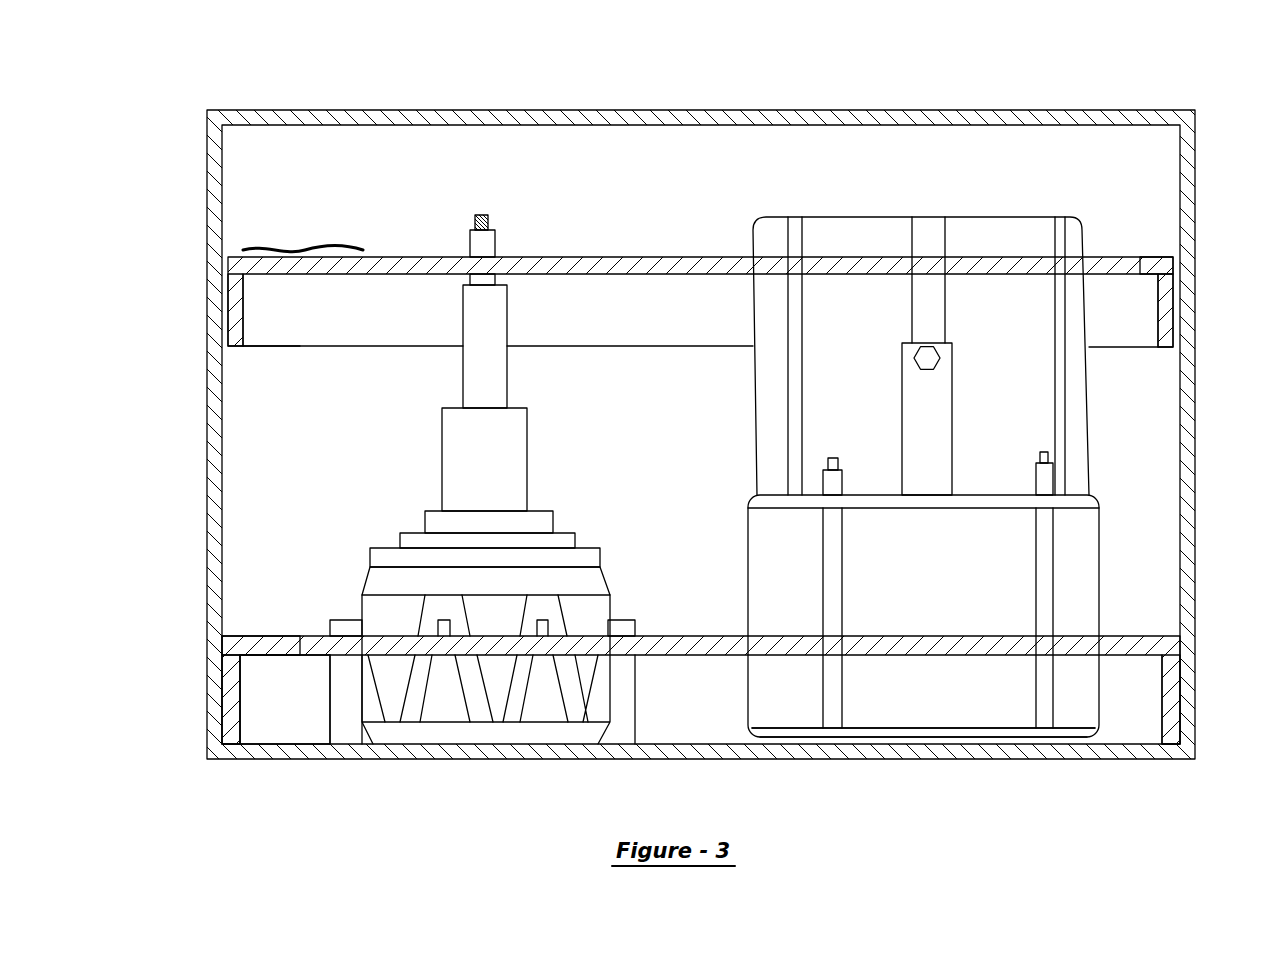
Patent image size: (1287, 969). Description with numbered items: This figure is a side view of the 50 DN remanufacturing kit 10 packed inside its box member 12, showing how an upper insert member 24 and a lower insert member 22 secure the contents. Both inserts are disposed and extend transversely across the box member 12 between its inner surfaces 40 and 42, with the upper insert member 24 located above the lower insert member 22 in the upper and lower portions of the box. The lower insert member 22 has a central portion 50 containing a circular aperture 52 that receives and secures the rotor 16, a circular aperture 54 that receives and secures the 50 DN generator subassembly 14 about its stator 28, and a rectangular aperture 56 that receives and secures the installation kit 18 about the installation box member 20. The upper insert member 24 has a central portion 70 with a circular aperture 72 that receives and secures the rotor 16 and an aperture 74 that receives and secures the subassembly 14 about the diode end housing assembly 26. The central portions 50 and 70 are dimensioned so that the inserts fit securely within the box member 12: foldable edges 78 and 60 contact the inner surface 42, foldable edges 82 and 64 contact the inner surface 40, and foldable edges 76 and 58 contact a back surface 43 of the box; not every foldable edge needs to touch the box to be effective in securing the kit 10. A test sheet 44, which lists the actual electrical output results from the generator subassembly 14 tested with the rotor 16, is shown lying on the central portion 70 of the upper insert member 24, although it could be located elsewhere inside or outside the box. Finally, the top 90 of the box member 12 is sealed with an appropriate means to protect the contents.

The kit 10 is at (1225, 97).
The box member 12 is at (207, 193).
The 50 DN generator subassembly 14 is at (1016, 515).
The rotor 16 is at (505, 465).
The installation kit 18 is at (288, 706).
The installation box member 20 is at (635, 693).
The lower insert member 22 is at (1157, 636).
The upper insert member 24 is at (1143, 258).
The diode end housing assembly 26 is at (1055, 195).
The stator 28 is at (955, 707).
The inner surface 40 is at (1205, 498).
The inner surface 42 is at (245, 441).
The back surface 43 is at (1128, 553).
The test sheet 44 is at (336, 251).
The central portion 50 is at (253, 635).
The circular aperture 52 is at (345, 665).
The circular aperture 54 is at (738, 678).
The rectangular aperture 56 is at (648, 618).
The foldable edge 58 is at (248, 672).
The foldable edge 60 is at (228, 705).
The foldable edge 64 is at (1171, 697).
The central portion 70 is at (622, 256).
The circular aperture 72 is at (512, 236).
The aperture 74 is at (733, 237).
The foldable edge 76 is at (267, 320).
The foldable edge 78 is at (233, 299).
The foldable edge 82 is at (1175, 315).
The top 90 is at (252, 110).